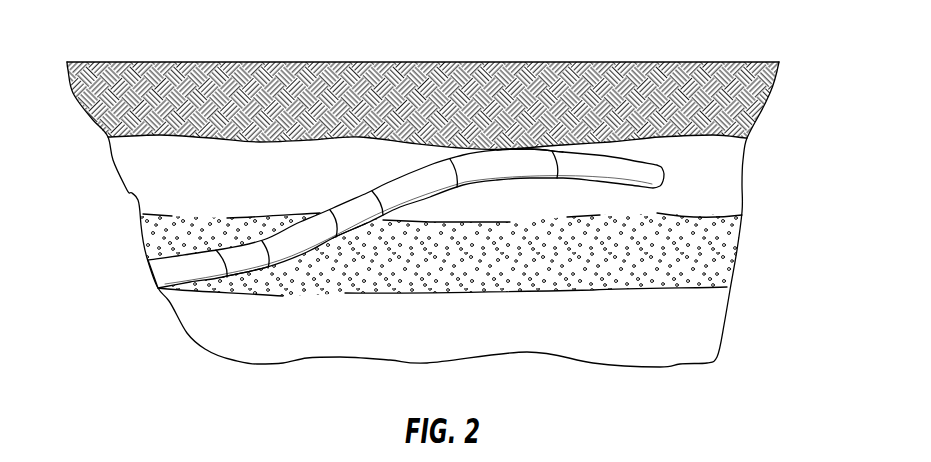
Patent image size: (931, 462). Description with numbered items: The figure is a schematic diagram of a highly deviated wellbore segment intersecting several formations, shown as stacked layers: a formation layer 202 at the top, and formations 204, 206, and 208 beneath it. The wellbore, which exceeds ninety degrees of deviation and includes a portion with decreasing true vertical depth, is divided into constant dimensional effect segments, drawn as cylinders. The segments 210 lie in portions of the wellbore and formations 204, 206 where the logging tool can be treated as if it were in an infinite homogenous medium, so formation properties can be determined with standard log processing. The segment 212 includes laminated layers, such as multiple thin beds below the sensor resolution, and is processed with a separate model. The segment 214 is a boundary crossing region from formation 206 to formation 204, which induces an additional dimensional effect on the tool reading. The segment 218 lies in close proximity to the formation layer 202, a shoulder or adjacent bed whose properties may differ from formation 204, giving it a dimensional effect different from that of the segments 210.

The formation layer 202 is at (758, 93).
The formation 204 is at (732, 168).
The formation 206 is at (727, 252).
The formation 208 is at (712, 323).
The segments 210 is at (179, 266).
The segment 212 is at (237, 265).
The segment 214 is at (353, 220).
The segment 218 is at (522, 165).